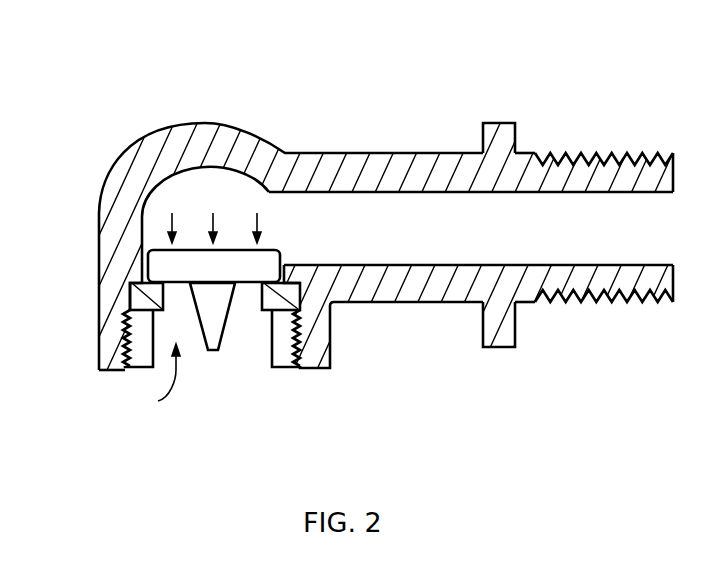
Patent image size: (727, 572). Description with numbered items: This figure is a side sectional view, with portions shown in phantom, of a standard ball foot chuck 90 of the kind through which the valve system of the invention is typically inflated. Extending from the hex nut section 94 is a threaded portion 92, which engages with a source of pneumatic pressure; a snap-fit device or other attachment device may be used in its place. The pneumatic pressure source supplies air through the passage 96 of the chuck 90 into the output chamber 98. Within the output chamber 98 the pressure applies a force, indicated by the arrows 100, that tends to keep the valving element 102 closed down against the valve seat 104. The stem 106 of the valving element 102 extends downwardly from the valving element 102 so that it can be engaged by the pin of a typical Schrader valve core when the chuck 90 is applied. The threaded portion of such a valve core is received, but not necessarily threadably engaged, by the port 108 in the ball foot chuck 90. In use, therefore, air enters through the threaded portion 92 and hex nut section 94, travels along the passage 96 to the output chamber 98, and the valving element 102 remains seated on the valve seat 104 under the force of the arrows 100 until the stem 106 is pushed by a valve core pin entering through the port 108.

The ball foot chuck 90 is at (362, 48).
The threaded portion 92 is at (601, 157).
The hex nut section 94 is at (497, 348).
The passage 96 is at (596, 241).
The output chamber 98 is at (201, 190).
The arrows 100 is at (172, 217).
The valving element 102 is at (160, 263).
The valve seat 104 is at (130, 296).
The stem 106 is at (213, 328).
The port 108 is at (141, 382).